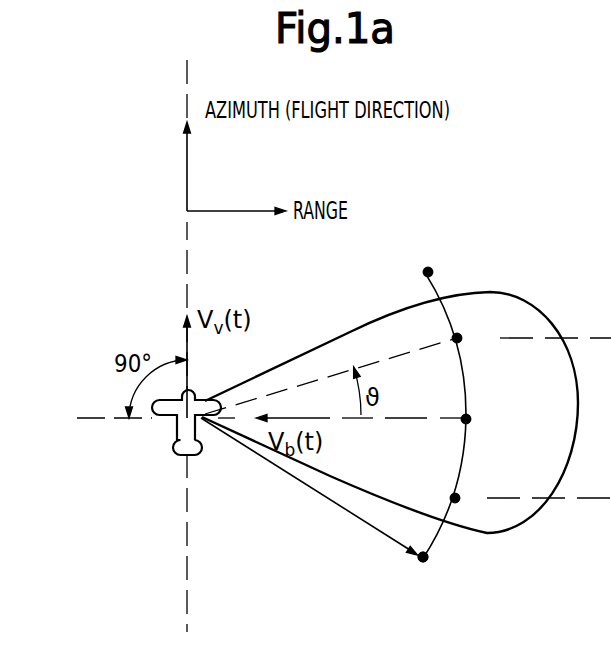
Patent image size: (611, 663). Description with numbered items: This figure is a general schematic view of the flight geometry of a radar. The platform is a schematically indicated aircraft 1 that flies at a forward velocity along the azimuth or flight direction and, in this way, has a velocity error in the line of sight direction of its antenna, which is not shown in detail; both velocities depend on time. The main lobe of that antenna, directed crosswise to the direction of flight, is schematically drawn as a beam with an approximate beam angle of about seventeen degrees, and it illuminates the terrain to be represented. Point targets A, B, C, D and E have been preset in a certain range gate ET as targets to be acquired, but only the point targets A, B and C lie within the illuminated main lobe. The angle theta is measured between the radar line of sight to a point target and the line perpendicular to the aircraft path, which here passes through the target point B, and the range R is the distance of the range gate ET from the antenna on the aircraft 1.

The aircraft 1 is at (158, 413).
The point target A is at (467, 334).
The point target B is at (476, 419).
The point target C is at (464, 499).
The point target D is at (437, 264).
The point target E is at (433, 566).
The range gate ET is at (418, 562).
The range R is at (309, 486).